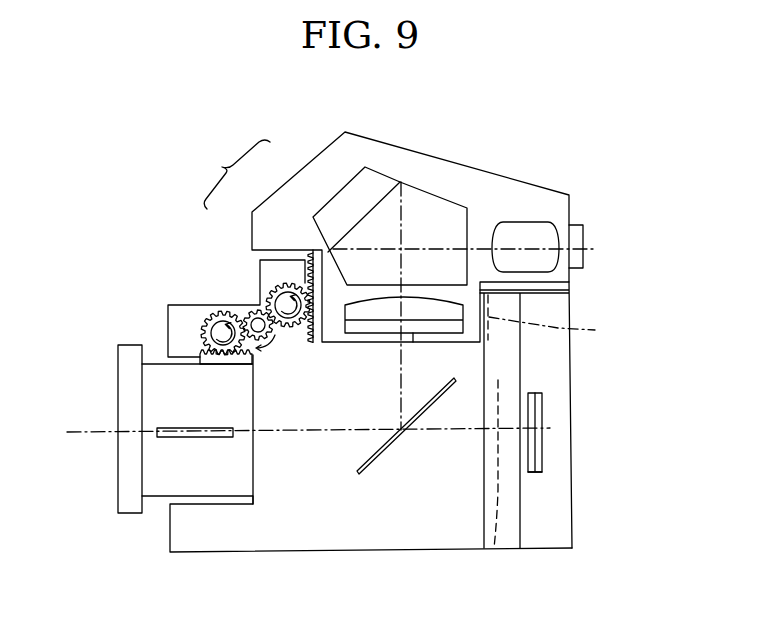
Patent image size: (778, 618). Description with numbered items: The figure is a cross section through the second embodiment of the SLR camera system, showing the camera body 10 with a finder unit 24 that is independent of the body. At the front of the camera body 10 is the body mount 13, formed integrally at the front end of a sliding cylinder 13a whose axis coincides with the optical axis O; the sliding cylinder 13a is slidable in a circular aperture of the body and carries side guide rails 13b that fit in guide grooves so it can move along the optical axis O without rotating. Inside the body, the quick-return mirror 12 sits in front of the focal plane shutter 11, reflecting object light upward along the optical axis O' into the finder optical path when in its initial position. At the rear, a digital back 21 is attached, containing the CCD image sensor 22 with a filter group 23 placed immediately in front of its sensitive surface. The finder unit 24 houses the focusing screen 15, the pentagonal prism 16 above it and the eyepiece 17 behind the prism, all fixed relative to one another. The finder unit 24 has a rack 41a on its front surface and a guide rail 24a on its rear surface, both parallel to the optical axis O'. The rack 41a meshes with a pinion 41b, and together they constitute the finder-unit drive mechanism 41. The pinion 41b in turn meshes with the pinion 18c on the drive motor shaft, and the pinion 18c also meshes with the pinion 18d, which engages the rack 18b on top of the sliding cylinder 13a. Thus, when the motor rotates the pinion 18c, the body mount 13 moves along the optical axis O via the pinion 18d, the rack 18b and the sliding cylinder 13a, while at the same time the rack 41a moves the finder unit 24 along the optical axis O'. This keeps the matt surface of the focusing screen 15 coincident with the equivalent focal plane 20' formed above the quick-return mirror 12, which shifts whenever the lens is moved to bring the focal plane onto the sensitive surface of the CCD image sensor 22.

The camera body 10 is at (338, 548).
The focal plane shutter 11 is at (495, 548).
The quick-return mirror 12 is at (373, 463).
The body mount 13 is at (125, 405).
The sliding cylinder 13a is at (168, 489).
The guide rail 13b is at (207, 437).
The focusing screen 15 is at (362, 331).
The pentagonal prism 16 is at (385, 182).
The eyepiece 17 is at (530, 226).
The rack 18b is at (202, 353).
The pinion 18c is at (247, 313).
The pinion 18d is at (208, 324).
The equivalent focal plane 20' is at (432, 356).
The digital back 21 is at (538, 542).
The CCD image sensor 22 is at (540, 400).
The filter group 23 is at (537, 450).
The finder unit 24 is at (470, 168).
The guide rail 24a is at (564, 330).
The finder-unit drive mechanism 41 is at (231, 174).
The rack 41a is at (310, 263).
The pinion 41b is at (282, 292).
The optical axis O is at (317, 373).
The optical axis O' is at (364, 306).